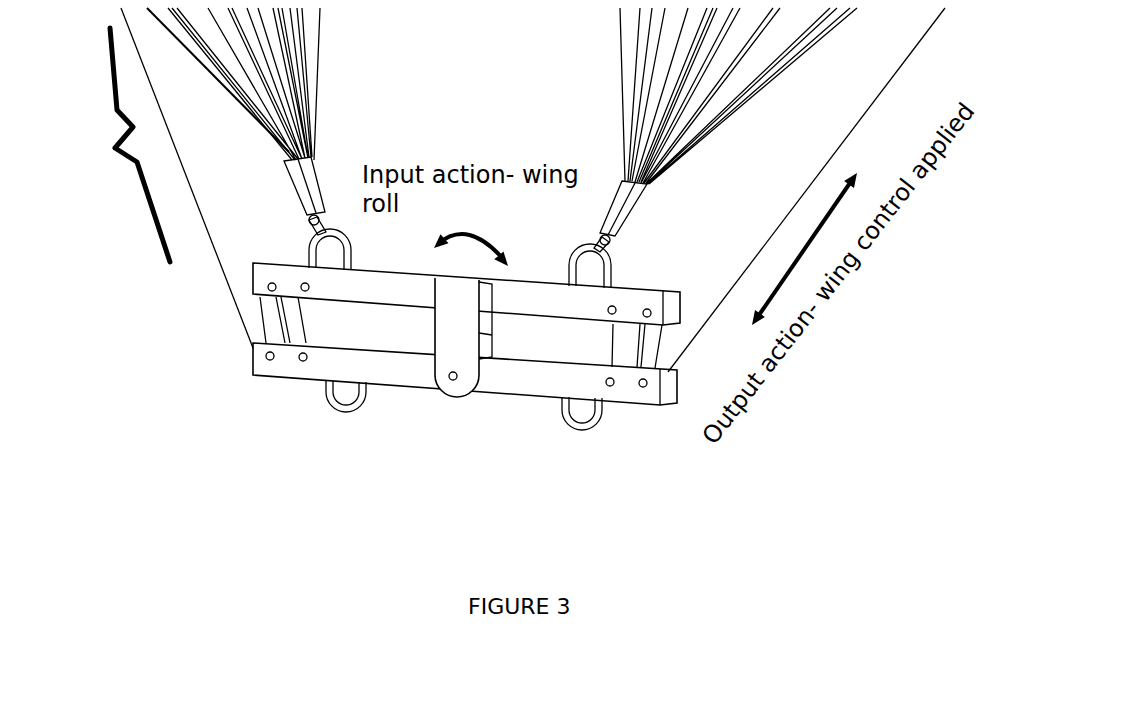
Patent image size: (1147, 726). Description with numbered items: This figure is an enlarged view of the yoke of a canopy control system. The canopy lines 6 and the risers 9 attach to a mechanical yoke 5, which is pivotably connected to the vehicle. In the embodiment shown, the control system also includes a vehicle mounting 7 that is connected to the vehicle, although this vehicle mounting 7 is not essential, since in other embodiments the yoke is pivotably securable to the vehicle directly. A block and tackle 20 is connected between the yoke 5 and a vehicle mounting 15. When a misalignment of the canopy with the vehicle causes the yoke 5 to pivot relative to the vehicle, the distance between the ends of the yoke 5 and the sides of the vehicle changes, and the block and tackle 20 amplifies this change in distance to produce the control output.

The yoke 5 is at (385, 284).
The canopy lines 6 is at (464, 135).
The vehicle mounting 7 is at (645, 383).
The risers 9 is at (327, 170).
The vehicle mounting 15 is at (510, 380).
The block and tackle 20 is at (662, 280).